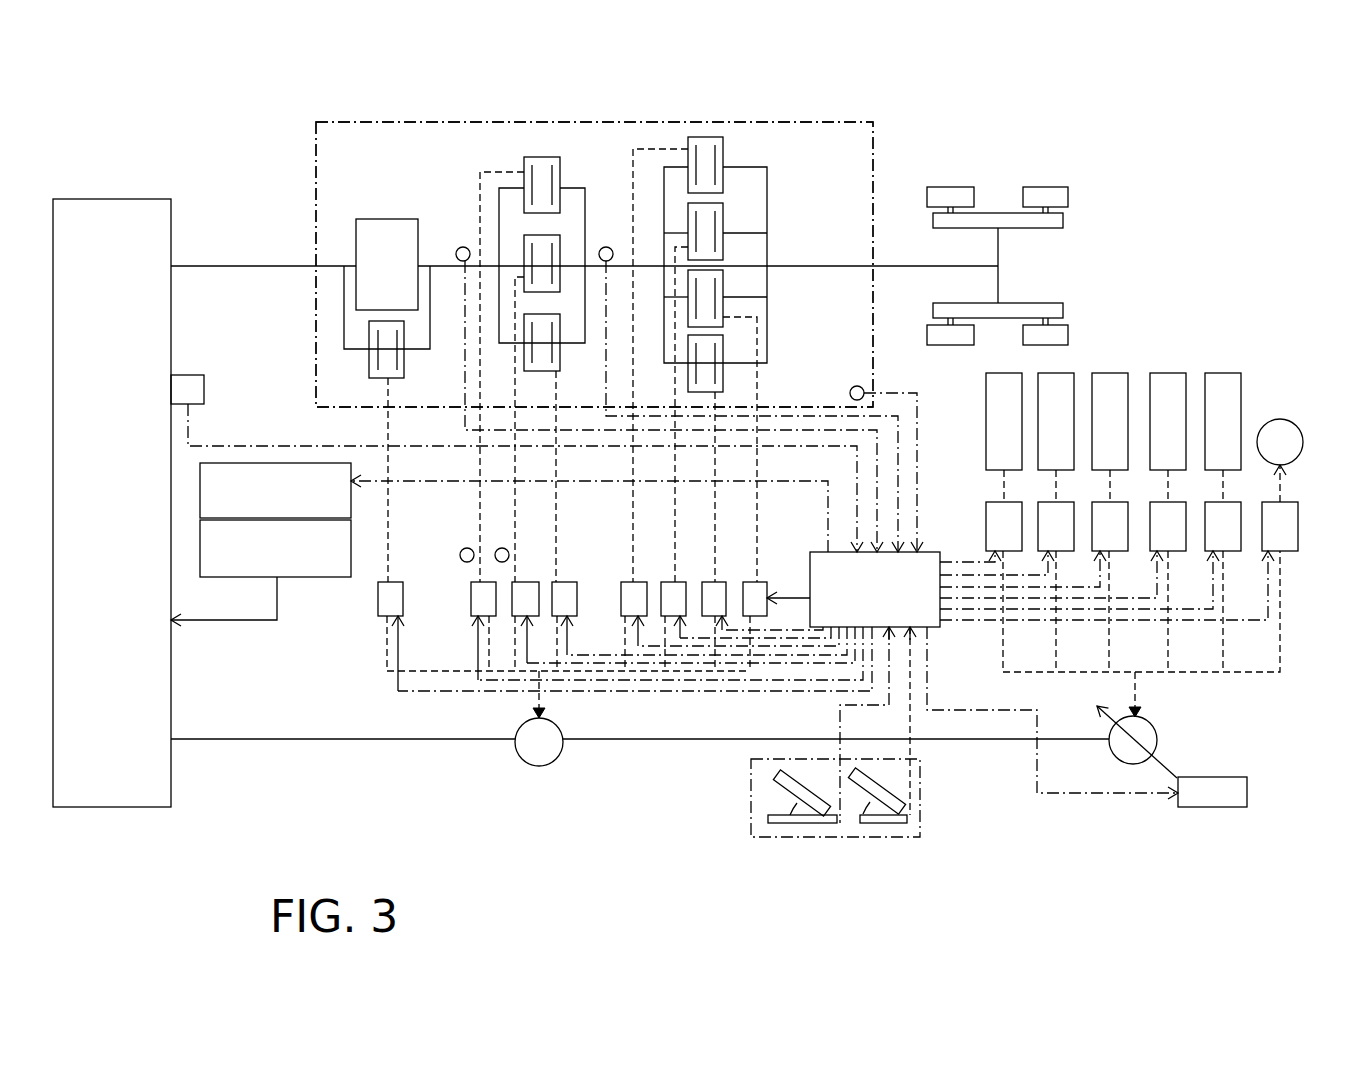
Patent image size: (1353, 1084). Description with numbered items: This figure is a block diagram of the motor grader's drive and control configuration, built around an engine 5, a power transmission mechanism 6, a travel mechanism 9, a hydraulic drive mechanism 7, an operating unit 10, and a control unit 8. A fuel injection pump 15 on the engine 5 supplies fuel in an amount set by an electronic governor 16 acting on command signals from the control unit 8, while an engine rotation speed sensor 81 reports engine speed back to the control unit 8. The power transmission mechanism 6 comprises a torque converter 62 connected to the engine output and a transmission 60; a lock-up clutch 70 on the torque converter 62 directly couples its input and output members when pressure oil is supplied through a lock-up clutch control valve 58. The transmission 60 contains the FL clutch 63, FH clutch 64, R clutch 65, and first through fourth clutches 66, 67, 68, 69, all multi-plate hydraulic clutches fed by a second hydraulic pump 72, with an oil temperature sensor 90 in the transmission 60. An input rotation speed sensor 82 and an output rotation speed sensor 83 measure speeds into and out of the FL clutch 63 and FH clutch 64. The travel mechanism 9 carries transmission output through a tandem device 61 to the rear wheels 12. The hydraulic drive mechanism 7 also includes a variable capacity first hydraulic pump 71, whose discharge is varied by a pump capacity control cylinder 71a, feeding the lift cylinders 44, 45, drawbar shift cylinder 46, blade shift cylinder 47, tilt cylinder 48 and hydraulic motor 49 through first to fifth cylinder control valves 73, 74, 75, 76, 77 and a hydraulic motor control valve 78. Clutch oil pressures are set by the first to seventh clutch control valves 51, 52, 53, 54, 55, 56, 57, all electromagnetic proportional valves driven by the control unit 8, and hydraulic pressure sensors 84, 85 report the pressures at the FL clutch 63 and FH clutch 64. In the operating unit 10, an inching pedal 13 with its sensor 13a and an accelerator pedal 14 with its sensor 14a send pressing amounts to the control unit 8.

The engine 5 is at (128, 199).
The power transmission mechanism 6 is at (770, 122).
The hydraulic drive mechanism 7 is at (1273, 722).
The control unit 8 is at (935, 552).
The travel mechanism 9 is at (1118, 190).
The operating unit 10 is at (920, 820).
The rear wheels 12 is at (949, 187).
The inching pedal 13 is at (789, 792).
The sensor 13a is at (800, 823).
The accelerator pedal 14 is at (872, 790).
The sensor 14a is at (888, 823).
The fuel injection pump 15 is at (299, 577).
The electronic governor 16 is at (351, 498).
The lift cylinder 44 is at (990, 436).
The lift cylinder 45 is at (1042, 436).
The drawbar shift cylinder 46 is at (1096, 436).
The blade shift cylinder 47 is at (1154, 436).
The tilt cylinder 48 is at (1209, 436).
The hydraulic motor 49 is at (1280, 419).
The first clutch control valve 51 is at (471, 600).
The second clutch control valve 52 is at (529, 582).
The third clutch control valve 53 is at (569, 582).
The fourth clutch control valve 54 is at (639, 582).
The fifth clutch control valve 55 is at (680, 582).
The sixth clutch control valve 56 is at (764, 582).
The seventh clutch control valve 57 is at (721, 582).
The lock-up clutch control valve 58 is at (382, 612).
The transmission 60 is at (608, 152).
The tandem device 61 is at (1063, 221).
The torque converter 62 is at (376, 219).
The FL clutch 63 is at (540, 157).
The FH clutch 64 is at (543, 293).
The R clutch 65 is at (538, 371).
The first clutch 66 is at (723, 155).
The second clutch 67 is at (723, 222).
The third clutch 68 is at (723, 293).
The fourth clutch 69 is at (723, 378).
The lock-up clutch 70 is at (385, 383).
The first hydraulic pump 71 is at (1157, 738).
The pump capacity control cylinder 71a is at (1247, 795).
The second hydraulic pump 72 is at (518, 752).
The first cylinder control valve 73 is at (990, 541).
The second cylinder control valve 74 is at (1042, 541).
The third cylinder control valve 75 is at (1096, 541).
The fourth cylinder control valve 76 is at (1154, 541).
The fifth cylinder control valve 77 is at (1209, 541).
The hydraulic motor control valve 78 is at (1266, 541).
The engine rotation speed sensor 81 is at (194, 375).
The input rotation speed sensor 82 is at (461, 247).
The output rotation speed sensor 83 is at (606, 247).
The hydraulic pressure sensor 84 is at (463, 560).
The hydraulic pressure sensor 85 is at (502, 548).
The oil temperature sensor 90 is at (855, 386).